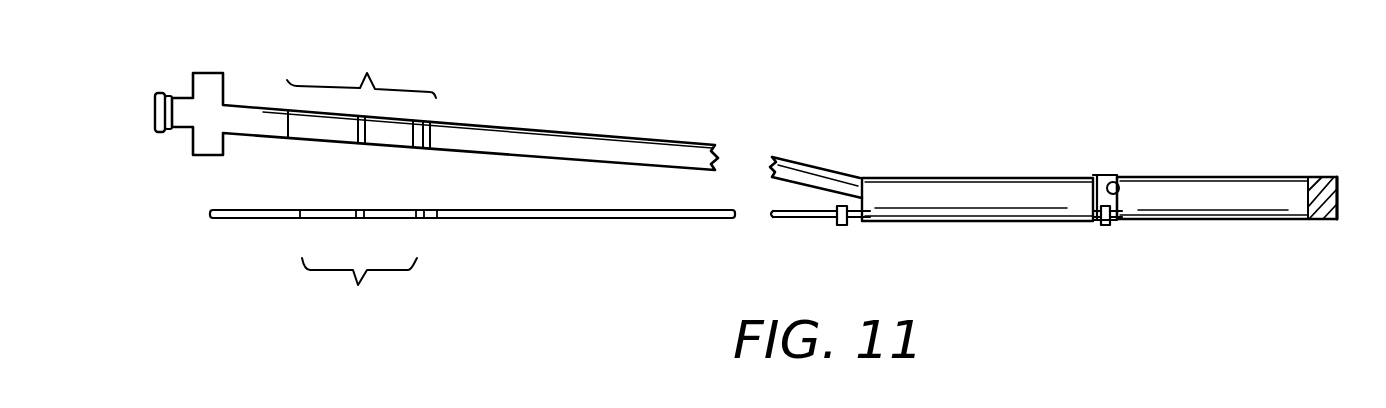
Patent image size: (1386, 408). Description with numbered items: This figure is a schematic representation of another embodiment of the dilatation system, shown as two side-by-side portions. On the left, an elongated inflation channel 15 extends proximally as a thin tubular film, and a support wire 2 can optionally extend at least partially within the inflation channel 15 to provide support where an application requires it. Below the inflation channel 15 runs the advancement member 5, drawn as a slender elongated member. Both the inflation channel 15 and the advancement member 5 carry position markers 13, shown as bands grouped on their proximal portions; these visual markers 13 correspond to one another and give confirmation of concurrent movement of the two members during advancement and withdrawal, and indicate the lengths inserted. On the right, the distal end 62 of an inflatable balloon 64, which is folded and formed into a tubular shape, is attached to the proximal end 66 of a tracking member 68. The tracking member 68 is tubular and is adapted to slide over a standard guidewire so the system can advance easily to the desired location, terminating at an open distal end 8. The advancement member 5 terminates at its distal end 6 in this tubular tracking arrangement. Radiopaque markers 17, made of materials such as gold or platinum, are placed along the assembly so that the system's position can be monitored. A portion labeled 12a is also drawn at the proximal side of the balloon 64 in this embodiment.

The wire 2 is at (527, 128).
The advancement member 5 is at (578, 218).
The distal end 6 is at (1328, 221).
The open distal end 8 is at (1338, 192).
The tube section 12a is at (912, 175).
The position markers 13 is at (361, 181).
The inflation channel 15 is at (610, 152).
The radiopaque markers 17 is at (845, 225).
The distal end 62 is at (1090, 174).
The inflatable balloon 64 is at (1005, 177).
The proximal end 66 is at (1113, 171).
The tracking member 68 is at (1232, 197).